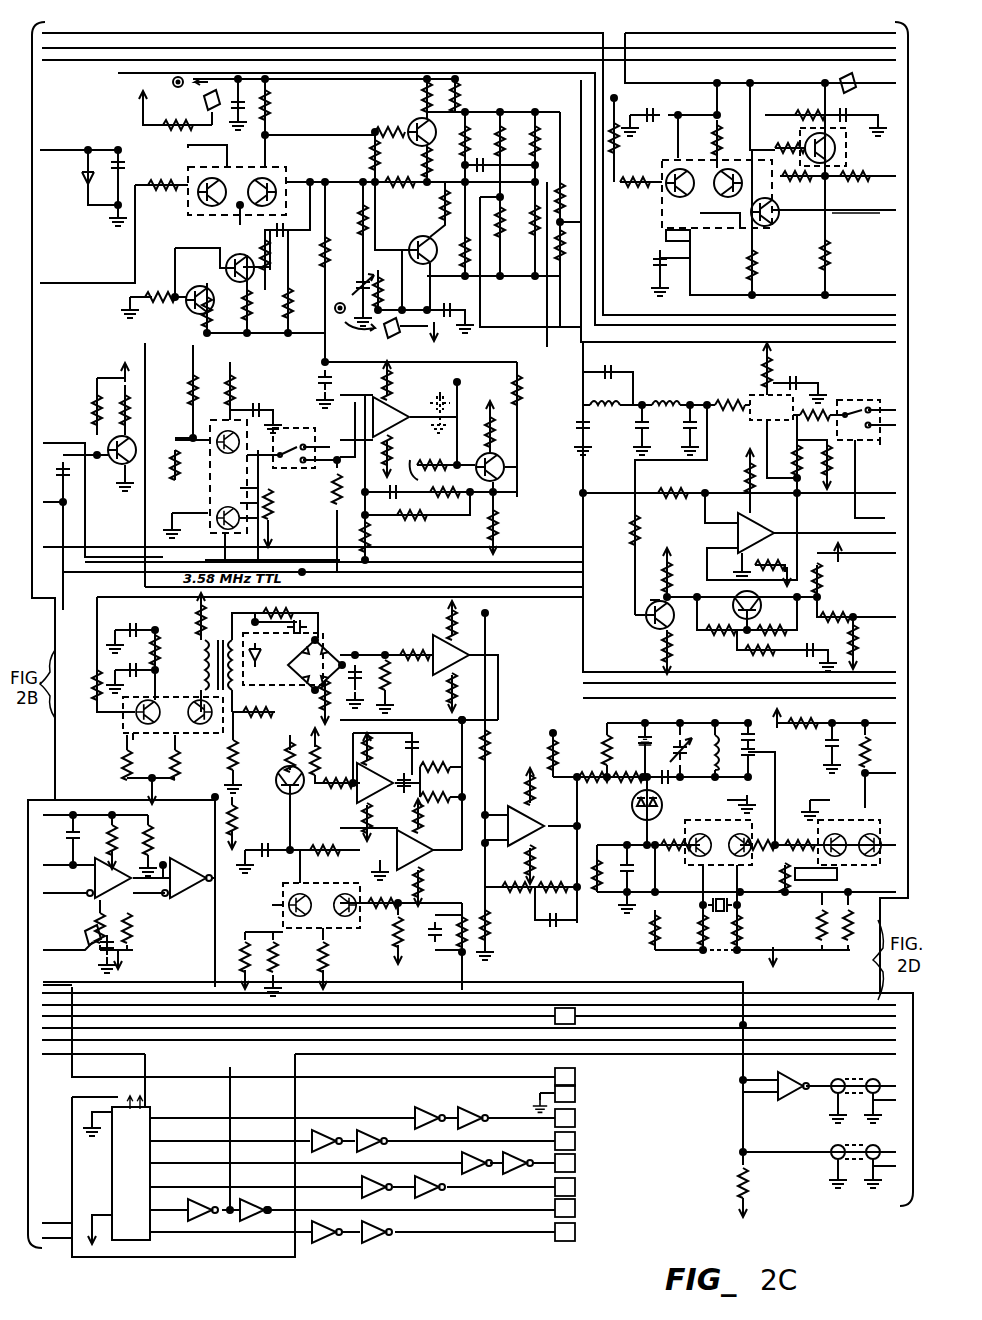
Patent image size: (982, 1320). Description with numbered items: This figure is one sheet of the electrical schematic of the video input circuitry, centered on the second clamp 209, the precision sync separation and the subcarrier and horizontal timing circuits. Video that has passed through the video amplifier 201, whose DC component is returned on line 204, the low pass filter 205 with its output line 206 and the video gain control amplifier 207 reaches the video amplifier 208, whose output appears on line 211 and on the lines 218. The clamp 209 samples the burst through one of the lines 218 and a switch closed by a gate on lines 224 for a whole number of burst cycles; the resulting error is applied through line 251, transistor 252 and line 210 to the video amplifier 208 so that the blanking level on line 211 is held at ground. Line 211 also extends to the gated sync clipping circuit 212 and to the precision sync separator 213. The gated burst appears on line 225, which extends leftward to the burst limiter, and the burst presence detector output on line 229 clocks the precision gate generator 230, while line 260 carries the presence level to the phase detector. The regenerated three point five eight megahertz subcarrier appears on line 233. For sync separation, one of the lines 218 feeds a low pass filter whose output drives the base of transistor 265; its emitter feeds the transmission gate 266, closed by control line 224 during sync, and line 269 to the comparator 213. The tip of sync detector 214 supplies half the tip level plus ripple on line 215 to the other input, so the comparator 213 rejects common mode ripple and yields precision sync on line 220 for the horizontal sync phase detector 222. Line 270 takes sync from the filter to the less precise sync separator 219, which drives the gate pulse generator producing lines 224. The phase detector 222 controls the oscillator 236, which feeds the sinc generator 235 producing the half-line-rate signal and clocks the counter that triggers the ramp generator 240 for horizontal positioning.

The video amplifier 201 is at (462, 733).
The line 204 is at (232, 425).
The low pass filter 205 is at (210, 505).
The line 206 is at (405, 408).
The video gain control amplifier 207 is at (368, 560).
The video amplifier 208 is at (375, 114).
The clamp circuit 209 is at (290, 445).
The line 210 is at (332, 272).
The line 211 is at (569, 162).
The gated sync clipping circuit 212 is at (805, 80).
The precision sync separator 213 is at (738, 535).
The tip of sync detector 214 is at (884, 394).
The line 215 is at (705, 507).
The lines 218 is at (589, 348).
The less precise sync separator 219 is at (739, 659).
The line 220 is at (318, 560).
The horizontal sync phase detector 222 is at (340, 638).
The lines 224 is at (872, 518).
The line 225 is at (110, 547).
The line 229 is at (112, 1030).
The precision gate generator 230 is at (195, 852).
The line 233 is at (650, 980).
The sinc generator 235 is at (401, 1131).
The oscillator 236 is at (852, 959).
The ramp generator 240 is at (270, 795).
The line 251 is at (410, 465).
The transistor 252 is at (512, 467).
The line 260 is at (694, 390).
The transistor 265 is at (762, 398).
The transmission gate 266 is at (843, 397).
The line 269 is at (783, 478).
The line 270 is at (635, 477).